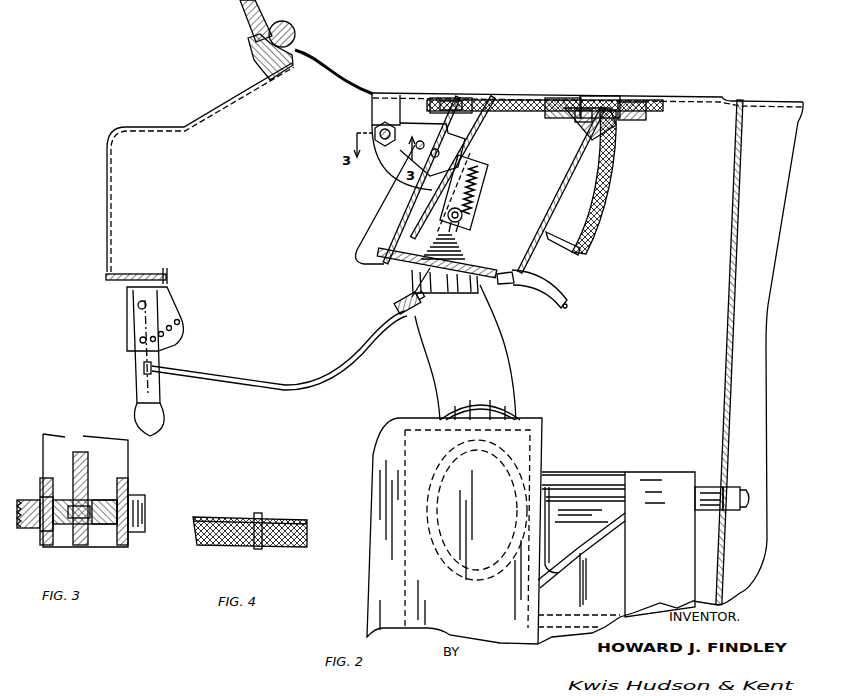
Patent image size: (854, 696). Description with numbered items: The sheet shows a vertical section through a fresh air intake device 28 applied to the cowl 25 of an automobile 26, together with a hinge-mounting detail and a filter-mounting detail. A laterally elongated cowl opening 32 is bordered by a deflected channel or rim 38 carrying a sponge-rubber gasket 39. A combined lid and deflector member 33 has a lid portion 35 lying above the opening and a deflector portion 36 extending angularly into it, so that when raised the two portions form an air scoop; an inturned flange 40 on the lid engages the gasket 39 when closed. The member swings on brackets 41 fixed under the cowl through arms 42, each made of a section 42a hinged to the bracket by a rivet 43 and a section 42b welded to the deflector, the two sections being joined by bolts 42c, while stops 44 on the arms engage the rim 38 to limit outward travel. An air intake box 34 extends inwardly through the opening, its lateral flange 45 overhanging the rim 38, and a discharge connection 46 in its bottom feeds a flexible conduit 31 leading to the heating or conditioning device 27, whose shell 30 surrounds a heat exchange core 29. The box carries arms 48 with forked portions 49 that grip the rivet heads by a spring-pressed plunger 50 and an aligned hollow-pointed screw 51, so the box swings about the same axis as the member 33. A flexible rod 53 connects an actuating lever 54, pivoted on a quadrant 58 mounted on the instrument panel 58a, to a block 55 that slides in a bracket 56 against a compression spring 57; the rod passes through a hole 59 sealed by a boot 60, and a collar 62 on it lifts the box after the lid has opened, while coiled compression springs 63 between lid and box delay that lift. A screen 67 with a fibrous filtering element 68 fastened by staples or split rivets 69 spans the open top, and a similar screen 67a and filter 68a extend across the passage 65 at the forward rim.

In FIG. 2, the cowl 25 is at (340, 90).
In FIG. 2, the automobile 26 is at (690, 98).
In FIG. 2, the air heating or conditioning device 27 is at (530, 422).
In FIG. 2, the fresh air intake device 28 is at (565, 98).
In FIG. 2, the heat exchange core 29 is at (530, 460).
In FIG. 2, the shell 30 is at (548, 435).
In FIG. 2, the flexible conduit 31 is at (512, 354).
In FIG. 2, the cowl opening 32 is at (515, 80).
In FIG. 2, the combined lid and deflector member 33 is at (540, 93).
In FIG. 2, the air intake box 34 is at (562, 178).
In FIG. 2, the lid portion 35 is at (600, 96).
In FIG. 2, the deflector portion 36 is at (478, 135).
In FIG. 2, the channel or rim 38 is at (635, 118).
In FIG. 2, the resilient gasket 39 is at (650, 110).
In FIG. 2, the inturned flange 40 is at (642, 98).
In FIG. 2, the brackets 41 is at (372, 105).
In FIG. 3, the brackets 41 is at (85, 530).
In FIG. 2, the arms 42 is at (420, 135).
In FIG. 3, the arms 42 is at (84, 453).
In FIG. 2, the arm section 42a is at (440, 120).
In FIG. 2, the arm section 42b is at (470, 150).
In FIG. 2, the bolts 42c is at (430, 160).
In FIG. 2, the rivets 43 is at (385, 134).
In FIG. 3, the rivets 43 is at (98, 498).
In FIG. 2, the stops 44 is at (450, 118).
In FIG. 2, the lateral flange or rim 45 is at (455, 98).
In FIG. 2, the discharge connection 46 is at (498, 288).
In FIG. 2, the arms 48 is at (385, 205).
In FIG. 3, the arms 48 is at (46, 446).
In FIG. 3, the forked portion 49 is at (132, 496).
In FIG. 3, the spring-pressed plunger 50 is at (62, 530).
In FIG. 3, the hollow-pointed screw 51 is at (110, 530).
In FIG. 2, the resiliently flexible rod or link 53 is at (318, 383).
In FIG. 2, the actuating lever 54 is at (136, 388).
In FIG. 2, the block or spring seat 55 is at (463, 216).
In FIG. 2, the bracket 56 is at (480, 162).
In FIG. 2, the compression spring 57 is at (482, 196).
In FIG. 2, the bracket or quadrant 58 is at (168, 316).
In FIG. 2, the instrument panel 58a is at (106, 277).
In FIG. 2, the hole 59 is at (437, 290).
In FIG. 2, the boot or hollow flexible packing 60 is at (462, 250).
In FIG. 2, the collar 62 is at (397, 300).
In FIG. 2, the coiled compression springs 63 is at (600, 100).
In FIG. 2, the passage 65 is at (572, 254).
In FIG. 2, the screen 67 is at (575, 98).
In FIG. 4, the screen 67 is at (300, 522).
In FIG. 2, the screen 67a is at (606, 205).
In FIG. 2, the filtering element 68 is at (552, 112).
In FIG. 4, the filtering element 68 is at (288, 546).
In FIG. 2, the filter element 68a is at (572, 218).
In FIG. 2, the staples or split rivets 69 is at (566, 304).
In FIG. 4, the staples or split rivets 69 is at (262, 516).